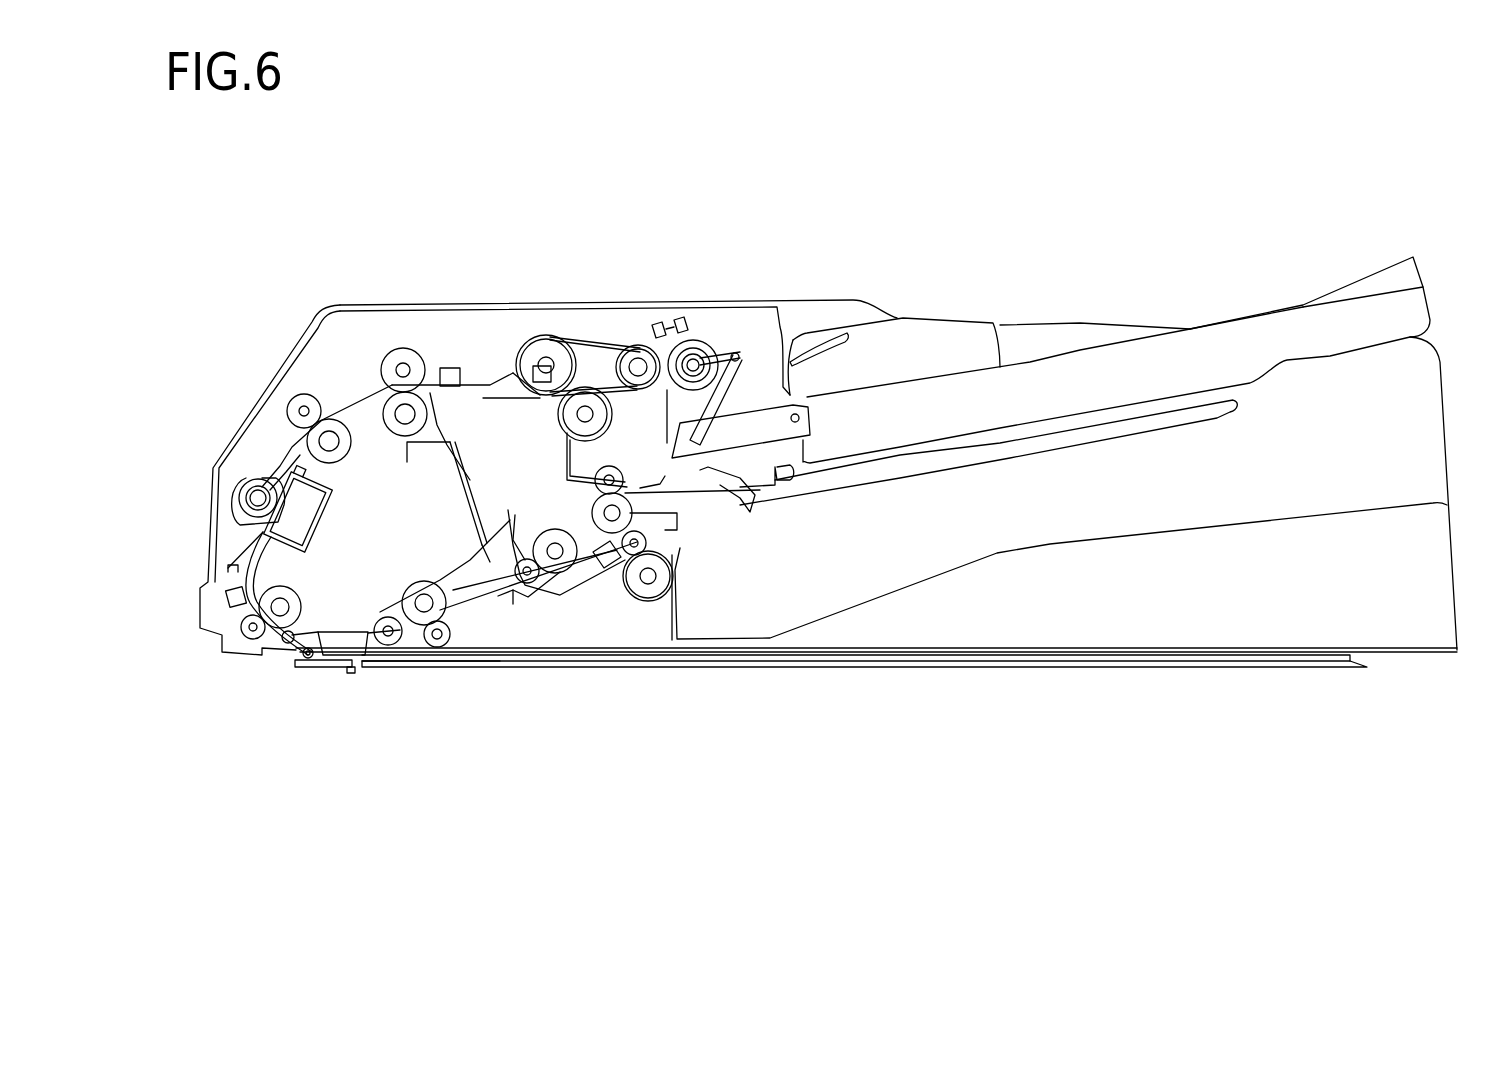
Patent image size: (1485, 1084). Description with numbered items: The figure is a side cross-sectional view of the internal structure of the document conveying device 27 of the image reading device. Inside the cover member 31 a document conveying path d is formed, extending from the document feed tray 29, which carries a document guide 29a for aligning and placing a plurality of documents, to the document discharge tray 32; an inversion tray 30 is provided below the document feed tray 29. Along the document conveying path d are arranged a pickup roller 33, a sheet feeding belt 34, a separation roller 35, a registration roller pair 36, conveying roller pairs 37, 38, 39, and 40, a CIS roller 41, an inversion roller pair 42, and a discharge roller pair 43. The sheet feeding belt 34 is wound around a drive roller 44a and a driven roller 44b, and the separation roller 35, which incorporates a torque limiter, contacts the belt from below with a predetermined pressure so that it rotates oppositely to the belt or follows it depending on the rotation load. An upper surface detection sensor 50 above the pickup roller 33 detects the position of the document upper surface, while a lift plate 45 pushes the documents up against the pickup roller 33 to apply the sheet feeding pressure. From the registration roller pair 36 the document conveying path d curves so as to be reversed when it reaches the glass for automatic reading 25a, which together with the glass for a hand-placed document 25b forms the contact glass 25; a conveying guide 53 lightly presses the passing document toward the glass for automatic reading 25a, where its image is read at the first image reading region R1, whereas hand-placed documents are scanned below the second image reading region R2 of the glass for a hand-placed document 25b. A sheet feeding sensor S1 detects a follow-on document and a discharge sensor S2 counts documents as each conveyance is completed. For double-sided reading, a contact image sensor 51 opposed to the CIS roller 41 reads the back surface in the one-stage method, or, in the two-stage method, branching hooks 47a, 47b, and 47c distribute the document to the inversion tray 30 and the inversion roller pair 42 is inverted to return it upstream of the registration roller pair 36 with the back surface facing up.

The document conveying device 27 is at (508, 214).
The cover member 31 is at (318, 300).
The registration roller pair 36 is at (400, 360).
The conveying roller pair 37 is at (300, 398).
The CIS roller 41 is at (245, 482).
The document conveying path d is at (358, 397).
The contact image sensor 51 is at (242, 530).
The sheet feeding sensor S1 is at (448, 368).
The drive roller 44a is at (545, 357).
The sheet feeding belt 34 is at (575, 358).
The separation roller 35 is at (588, 400).
The driven roller 44b is at (638, 358).
The upper surface detection sensor 50 is at (690, 320).
The pickup roller 33 is at (705, 347).
The lift plate 45 is at (757, 425).
The document guide 29a is at (955, 328).
The document feed tray 29 is at (1231, 320).
The inversion tray 30 is at (1150, 424).
The document discharge tray 32 is at (1000, 554).
The inversion roller pair 42 is at (672, 530).
The branching hook 47c is at (472, 504).
The branching hook 47a is at (482, 594).
The conveying roller pair 39 is at (405, 602).
The conveying guide 53 is at (338, 642).
The conveying roller pair 38 is at (252, 640).
The first image reading region R1 is at (330, 667).
The glass for automatic reading 25a is at (310, 668).
The glass for a hand-placed document 25b is at (483, 668).
The contact glass 25 is at (445, 762).
The branching hook 47b is at (530, 592).
The conveying roller pair 40 is at (598, 602).
The discharge roller pair 43 is at (645, 602).
The discharge sensor S2 is at (602, 567).
The second image reading region R2 is at (893, 657).